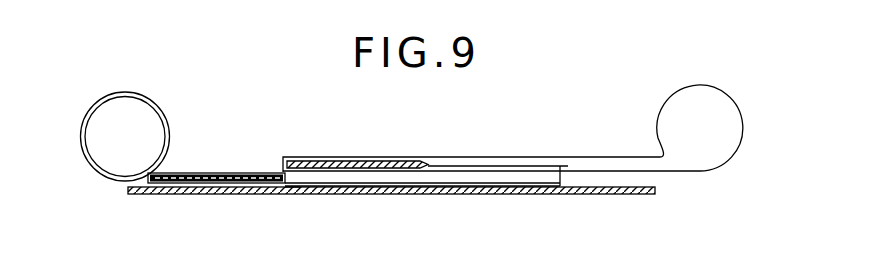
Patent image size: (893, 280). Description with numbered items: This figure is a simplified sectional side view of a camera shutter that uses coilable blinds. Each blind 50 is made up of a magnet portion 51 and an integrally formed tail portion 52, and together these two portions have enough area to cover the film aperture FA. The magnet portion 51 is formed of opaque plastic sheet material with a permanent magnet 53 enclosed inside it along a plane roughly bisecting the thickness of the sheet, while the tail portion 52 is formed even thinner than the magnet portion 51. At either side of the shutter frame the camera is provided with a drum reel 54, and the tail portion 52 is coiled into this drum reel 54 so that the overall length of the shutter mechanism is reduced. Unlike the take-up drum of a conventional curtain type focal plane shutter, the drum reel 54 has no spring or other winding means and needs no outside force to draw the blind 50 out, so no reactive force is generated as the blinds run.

The blind 50 is at (196, 171).
The magnet portion 51 is at (208, 184).
The tail portion 52 is at (163, 130).
The permanent magnet 53 is at (262, 176).
The drum reel 54 is at (133, 93).
The film aperture FA is at (291, 189).